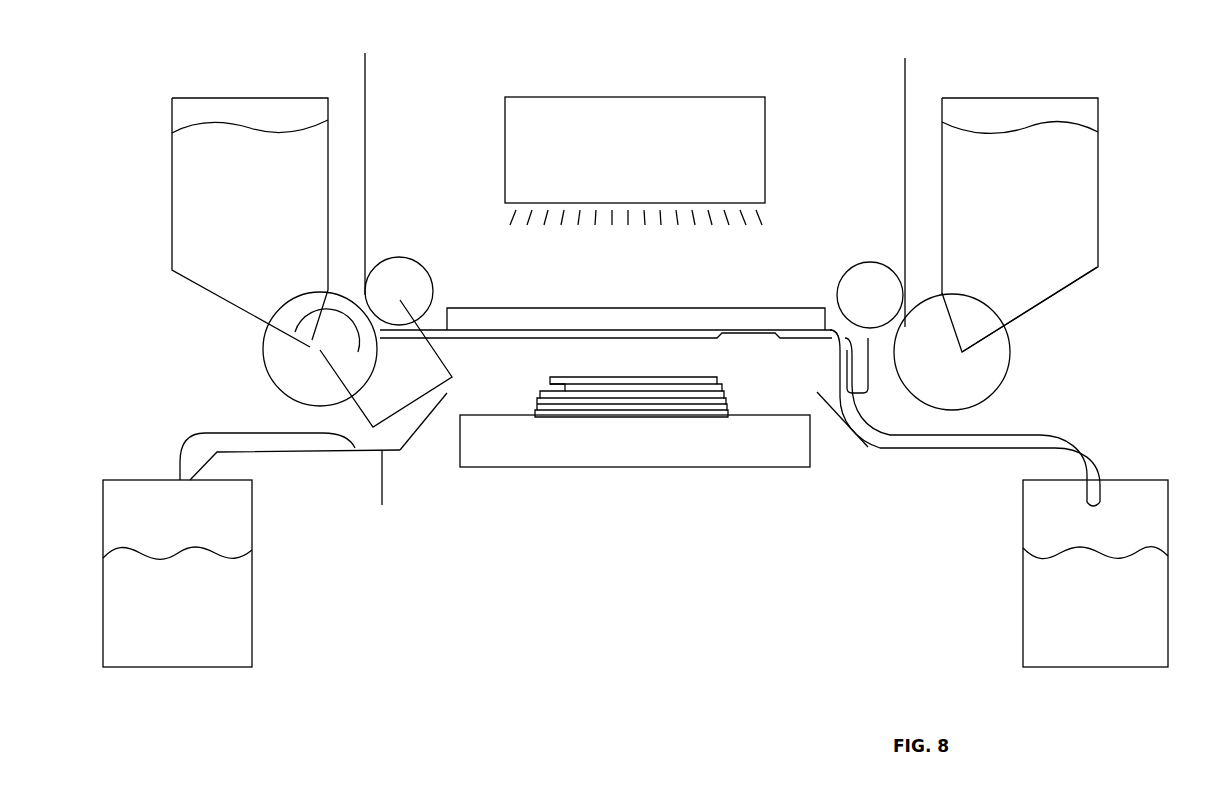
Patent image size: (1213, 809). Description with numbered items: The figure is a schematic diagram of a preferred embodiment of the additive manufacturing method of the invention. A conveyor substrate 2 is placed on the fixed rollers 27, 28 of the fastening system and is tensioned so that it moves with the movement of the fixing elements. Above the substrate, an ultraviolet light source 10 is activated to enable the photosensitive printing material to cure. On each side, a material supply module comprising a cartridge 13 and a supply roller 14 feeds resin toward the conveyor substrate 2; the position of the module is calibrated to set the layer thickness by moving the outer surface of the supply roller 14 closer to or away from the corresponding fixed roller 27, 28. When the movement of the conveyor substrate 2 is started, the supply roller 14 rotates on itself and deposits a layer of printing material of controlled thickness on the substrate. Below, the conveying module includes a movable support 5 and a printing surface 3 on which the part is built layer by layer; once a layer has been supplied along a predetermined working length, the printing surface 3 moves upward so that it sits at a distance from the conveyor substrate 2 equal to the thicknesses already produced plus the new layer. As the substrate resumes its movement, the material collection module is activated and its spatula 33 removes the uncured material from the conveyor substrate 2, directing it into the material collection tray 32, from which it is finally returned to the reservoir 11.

The conveyor substrate 2 is at (905, 185).
The printing surface 3 is at (627, 415).
The movable support 5 is at (622, 457).
The ultraviolet light source 10 is at (710, 123).
The reservoir 11 is at (235, 620).
The cartridge 13 is at (182, 222).
The supply roller 14 is at (288, 362).
The fixed roller 27 is at (400, 285).
The fixed roller 28 is at (870, 300).
The material collection tray 32 is at (907, 450).
The spatula 33 is at (852, 375).